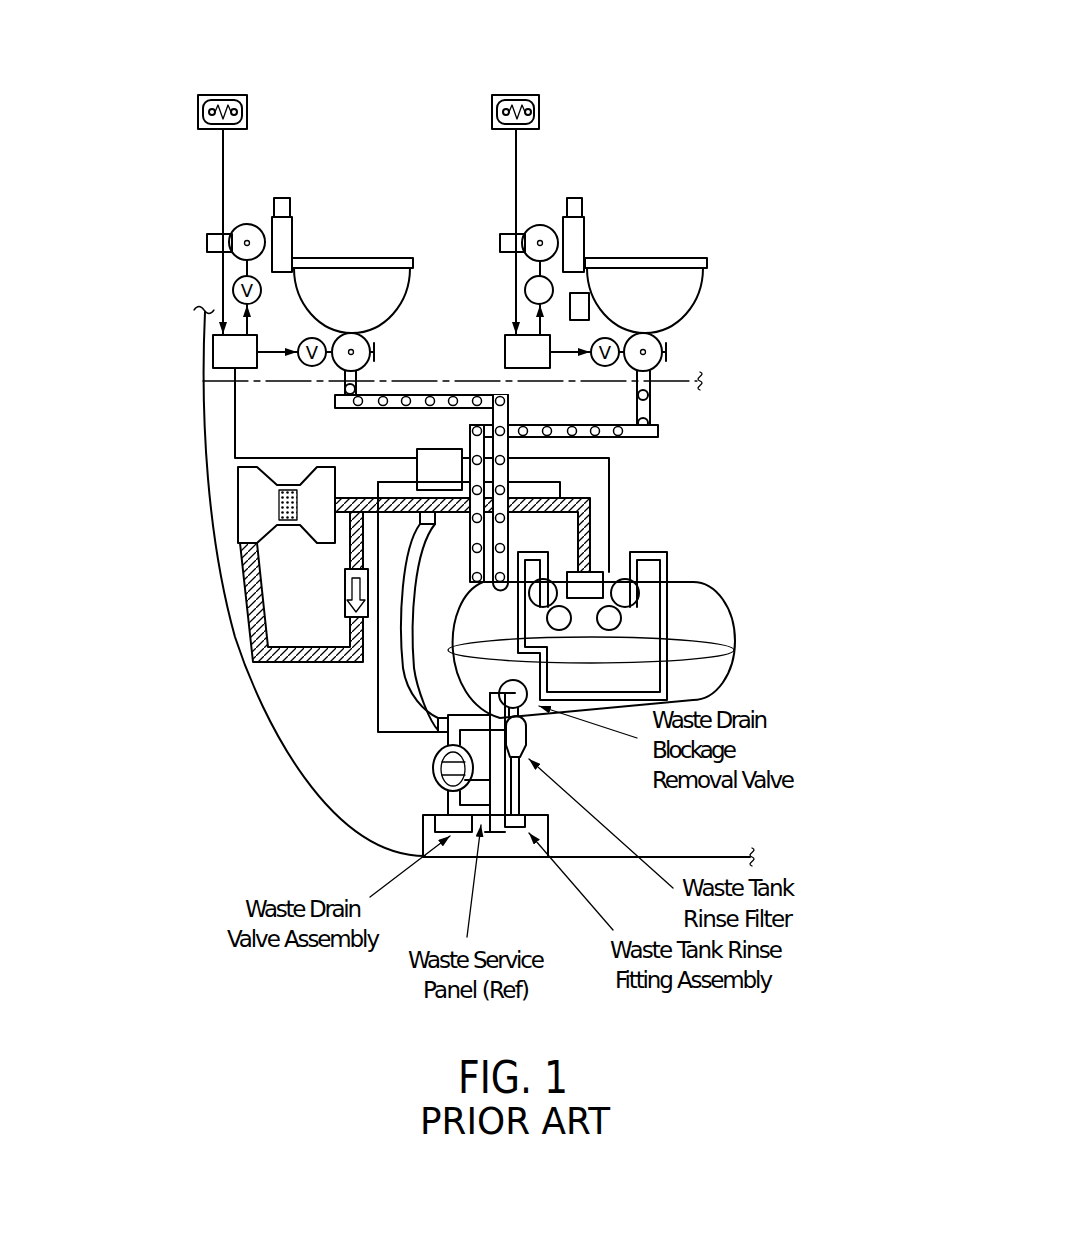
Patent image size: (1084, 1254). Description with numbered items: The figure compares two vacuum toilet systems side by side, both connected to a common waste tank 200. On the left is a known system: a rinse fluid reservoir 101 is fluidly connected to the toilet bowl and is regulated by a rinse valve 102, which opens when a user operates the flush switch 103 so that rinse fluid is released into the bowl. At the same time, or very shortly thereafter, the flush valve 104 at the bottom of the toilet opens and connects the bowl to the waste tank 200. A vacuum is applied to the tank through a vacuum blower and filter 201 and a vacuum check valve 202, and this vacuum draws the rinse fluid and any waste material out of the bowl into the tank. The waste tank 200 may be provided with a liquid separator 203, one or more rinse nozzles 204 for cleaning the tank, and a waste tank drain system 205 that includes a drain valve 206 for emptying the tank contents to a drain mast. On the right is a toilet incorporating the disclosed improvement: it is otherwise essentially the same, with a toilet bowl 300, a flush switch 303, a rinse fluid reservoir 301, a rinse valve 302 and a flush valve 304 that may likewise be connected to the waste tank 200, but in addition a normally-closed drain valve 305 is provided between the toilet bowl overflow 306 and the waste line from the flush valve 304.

The rinse fluid reservoir 101 is at (283, 240).
The rinse valve 102 is at (233, 236).
The flush switch 103 is at (196, 133).
The flush valve 104 is at (356, 343).
The waste tank 200 is at (708, 564).
The vacuum blower and filter 201 is at (234, 525).
The vacuum check valve 202 is at (332, 595).
The liquid separator 203 is at (606, 572).
The rinse nozzles 204 is at (652, 610).
The waste tank drain system 205 is at (633, 812).
The drain valve 206 is at (424, 772).
The toilet bowl 300 is at (694, 250).
The rinse fluid reservoir 301 is at (588, 217).
The rinse valve 302 is at (538, 230).
The flush switch 303 is at (519, 107).
The flush valve 304 is at (792, 298).
The drain valve 305 is at (559, 292).
The toilet bowl overflow 306 is at (580, 293).